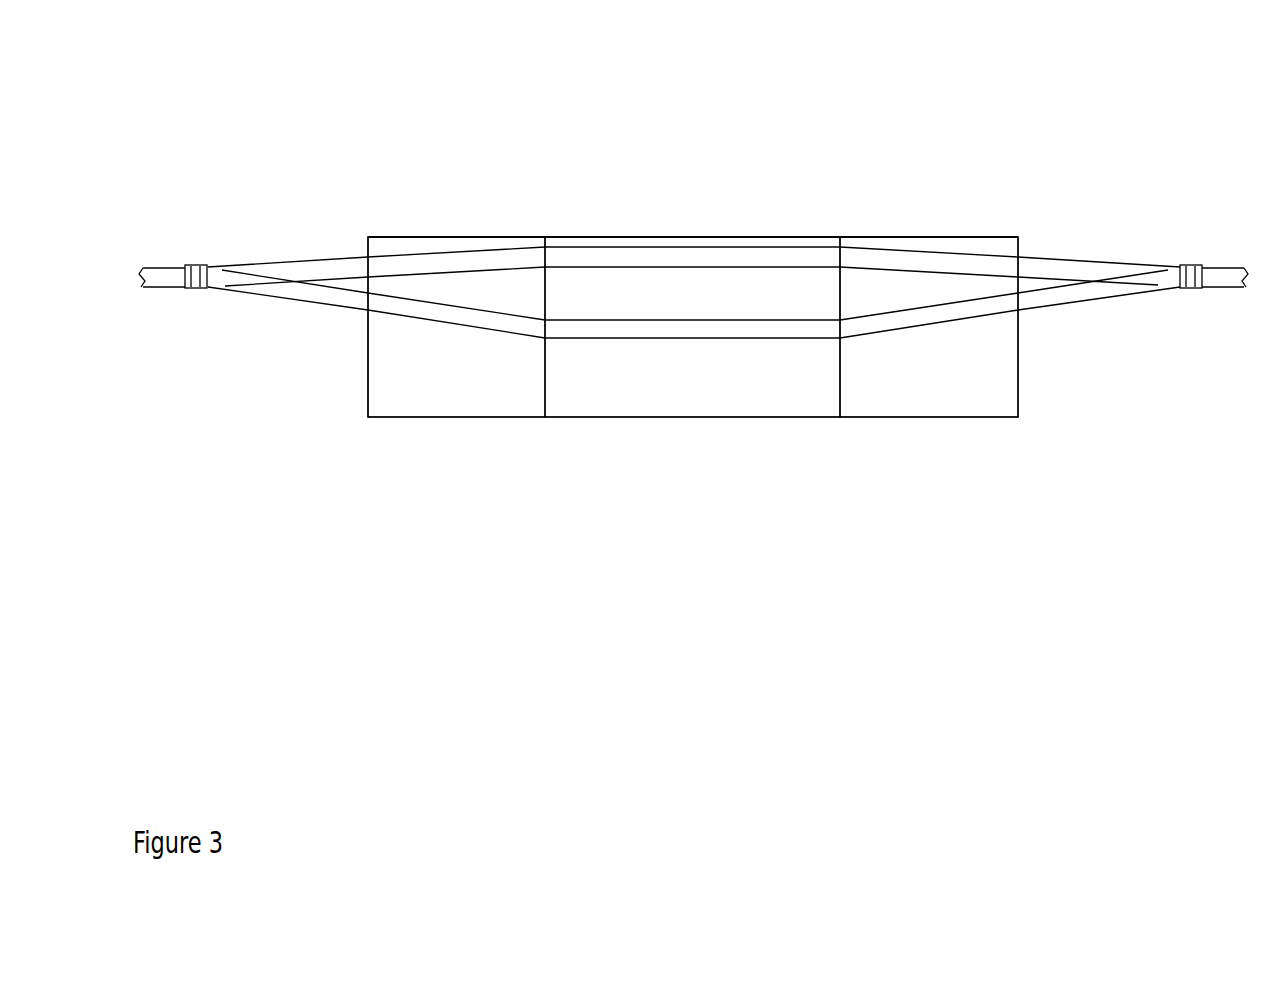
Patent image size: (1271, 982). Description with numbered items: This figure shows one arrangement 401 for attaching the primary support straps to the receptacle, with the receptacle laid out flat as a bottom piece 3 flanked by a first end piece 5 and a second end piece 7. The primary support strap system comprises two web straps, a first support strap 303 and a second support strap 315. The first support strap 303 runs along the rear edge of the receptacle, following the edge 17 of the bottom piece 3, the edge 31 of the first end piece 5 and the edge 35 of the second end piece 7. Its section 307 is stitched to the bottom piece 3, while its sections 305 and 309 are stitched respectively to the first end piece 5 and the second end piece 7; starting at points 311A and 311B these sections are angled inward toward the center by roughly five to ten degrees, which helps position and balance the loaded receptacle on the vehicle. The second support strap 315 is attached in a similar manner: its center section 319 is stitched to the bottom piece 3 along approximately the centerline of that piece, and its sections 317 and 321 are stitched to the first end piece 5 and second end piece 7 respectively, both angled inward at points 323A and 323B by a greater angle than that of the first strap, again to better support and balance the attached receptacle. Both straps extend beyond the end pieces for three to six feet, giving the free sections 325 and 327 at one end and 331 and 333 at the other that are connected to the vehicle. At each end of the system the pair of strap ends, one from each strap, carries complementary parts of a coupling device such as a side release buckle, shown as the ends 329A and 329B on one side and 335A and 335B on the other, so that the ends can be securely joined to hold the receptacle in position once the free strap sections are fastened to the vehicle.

The optical waveguide device 401 is at (527, 117).
The end of first support strap 325 is at (140, 265).
The free section of second support strap 327 is at (137, 285).
The strap end coupling part 329A is at (188, 263).
The strap end coupling part 329B is at (202, 289).
The section of second support strap 317 is at (402, 307).
The edge of first end piece 31 is at (427, 236).
The section of first support strap 305 is at (495, 250).
The section of first support strap 307 is at (620, 248).
The first support strap 303 is at (697, 248).
The edge of bottom piece 17 is at (725, 237).
The section of first support strap 309 is at (934, 262).
The edge of second end piece 35 is at (968, 237).
The end of first support strap 331 is at (1050, 258).
The strap end coupling part 335A is at (1192, 260).
The first end piece 5 is at (409, 400).
The center section of second support strap 319 is at (572, 330).
The second support strap 315 is at (643, 330).
The bottom piece 3 is at (668, 395).
The second end piece 7 is at (940, 395).
The section of second support strap 321 is at (973, 315).
The free section of second support strap 333 is at (1050, 305).
The strap end coupling part 335B is at (1193, 285).
The angle point 311A is at (543, 266).
The angle point 311B is at (845, 268).
The angle point 323A is at (545, 317).
The angle point 323B is at (840, 313).